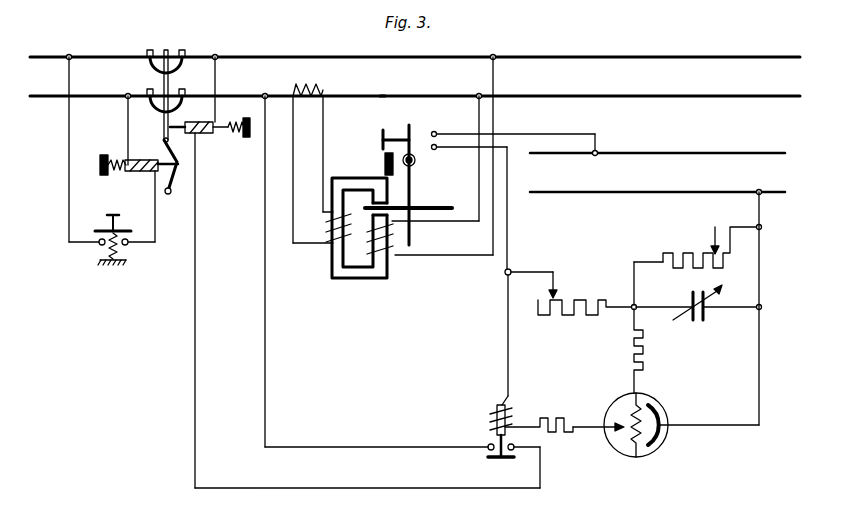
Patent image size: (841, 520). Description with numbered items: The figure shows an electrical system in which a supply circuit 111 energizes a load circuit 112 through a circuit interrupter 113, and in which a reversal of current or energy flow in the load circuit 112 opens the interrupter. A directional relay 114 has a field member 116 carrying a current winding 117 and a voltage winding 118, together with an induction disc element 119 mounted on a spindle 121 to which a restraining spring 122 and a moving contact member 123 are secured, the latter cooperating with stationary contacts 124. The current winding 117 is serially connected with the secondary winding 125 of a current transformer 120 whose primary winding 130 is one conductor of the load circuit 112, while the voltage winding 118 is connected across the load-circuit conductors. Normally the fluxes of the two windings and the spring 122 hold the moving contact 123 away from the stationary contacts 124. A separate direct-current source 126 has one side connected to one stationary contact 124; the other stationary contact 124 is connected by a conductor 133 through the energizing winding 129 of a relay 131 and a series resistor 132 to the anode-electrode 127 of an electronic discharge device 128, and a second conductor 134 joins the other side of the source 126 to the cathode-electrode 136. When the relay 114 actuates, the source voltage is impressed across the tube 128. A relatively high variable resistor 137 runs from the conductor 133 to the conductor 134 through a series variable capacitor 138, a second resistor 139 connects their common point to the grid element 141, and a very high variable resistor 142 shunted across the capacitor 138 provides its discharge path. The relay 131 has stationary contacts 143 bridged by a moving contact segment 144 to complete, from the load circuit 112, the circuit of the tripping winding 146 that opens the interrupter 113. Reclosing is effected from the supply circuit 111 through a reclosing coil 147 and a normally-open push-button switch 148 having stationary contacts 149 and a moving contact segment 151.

The supply circuit 111 is at (95, 62).
The load circuit 112 is at (246, 84).
The circuit interrupter 113 is at (170, 80).
The directional relay 114 is at (441, 182).
The field member 116 is at (335, 275).
The current winding 117 is at (325, 218).
The voltage winding 118 is at (390, 250).
The induction disc element 119 is at (445, 200).
The current transformer 120 is at (305, 79).
The spindle 121 is at (412, 188).
The restraining spring 122 is at (416, 160).
The moving contact member 123 is at (392, 125).
The stationary contacts 124 is at (436, 128).
The secondary winding 125 is at (325, 100).
The direct-current source 126 is at (565, 156).
The anode-electrode 127 is at (612, 435).
The electronic discharge device 128 is at (666, 440).
The energizing winding 129 is at (497, 404).
The primary winding 130 is at (355, 95).
The relay 131 is at (481, 420).
The series resistor 132 is at (566, 408).
The conductor 133 is at (512, 262).
The second conductor 134 is at (762, 270).
The cathode-electrode 136 is at (660, 440).
The variable resistor 137 is at (578, 298).
The variable capacitor 138 is at (700, 322).
The second resistor 139 is at (644, 355).
The grid element 141 is at (636, 457).
The variable resistor 142 is at (686, 243).
The stationary contacts 143 is at (514, 450).
The moving contact segment 144 is at (488, 452).
The tripping winding 146 is at (205, 135).
The reclosing coil 147 is at (123, 174).
The push-button switch 148 is at (122, 228).
The stationary contacts 149 is at (128, 246).
The moving contact segment 151 is at (98, 240).